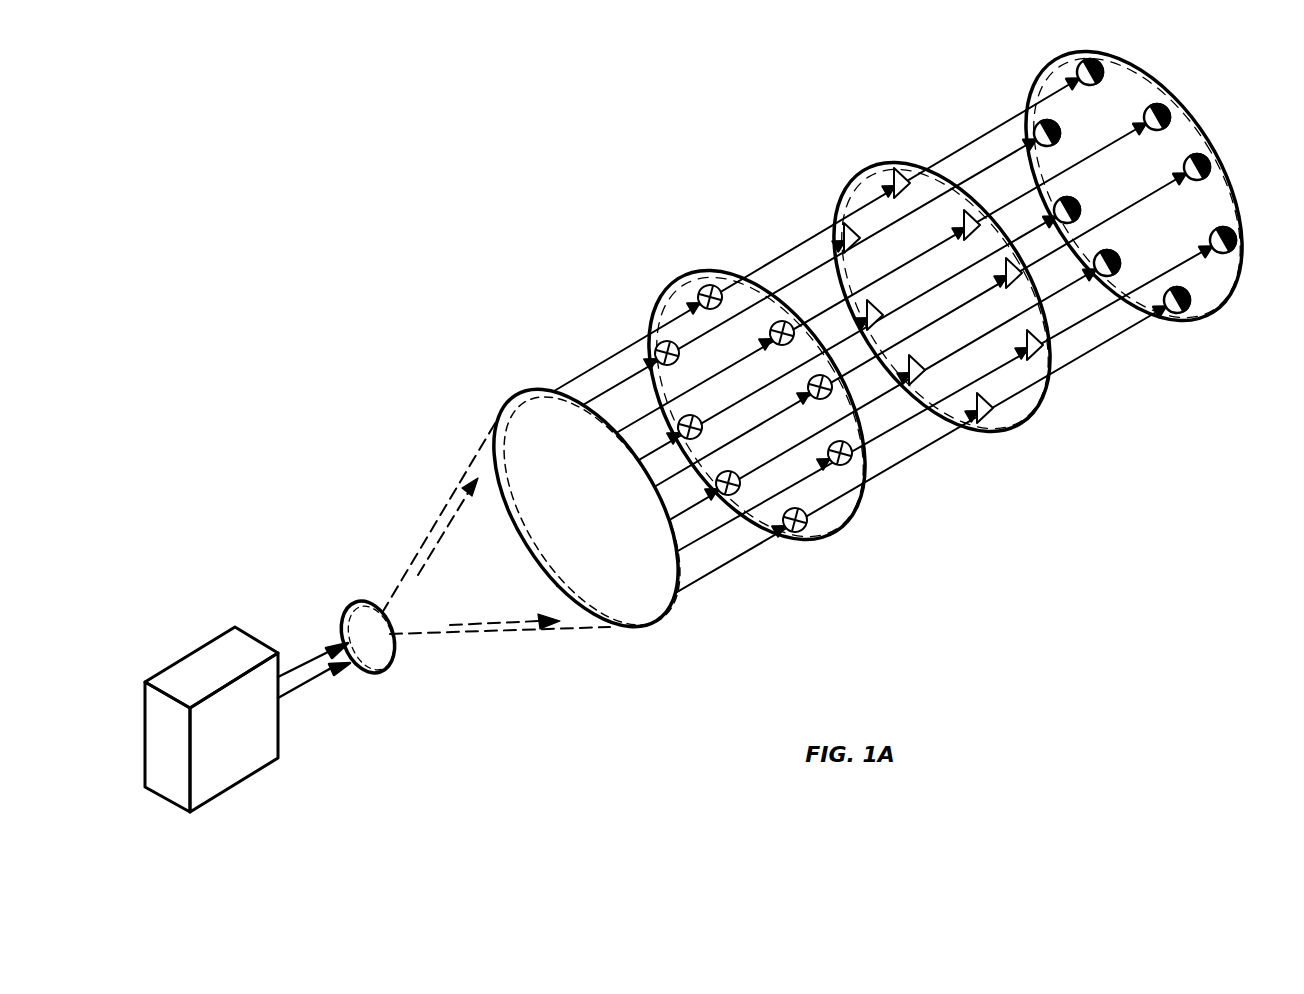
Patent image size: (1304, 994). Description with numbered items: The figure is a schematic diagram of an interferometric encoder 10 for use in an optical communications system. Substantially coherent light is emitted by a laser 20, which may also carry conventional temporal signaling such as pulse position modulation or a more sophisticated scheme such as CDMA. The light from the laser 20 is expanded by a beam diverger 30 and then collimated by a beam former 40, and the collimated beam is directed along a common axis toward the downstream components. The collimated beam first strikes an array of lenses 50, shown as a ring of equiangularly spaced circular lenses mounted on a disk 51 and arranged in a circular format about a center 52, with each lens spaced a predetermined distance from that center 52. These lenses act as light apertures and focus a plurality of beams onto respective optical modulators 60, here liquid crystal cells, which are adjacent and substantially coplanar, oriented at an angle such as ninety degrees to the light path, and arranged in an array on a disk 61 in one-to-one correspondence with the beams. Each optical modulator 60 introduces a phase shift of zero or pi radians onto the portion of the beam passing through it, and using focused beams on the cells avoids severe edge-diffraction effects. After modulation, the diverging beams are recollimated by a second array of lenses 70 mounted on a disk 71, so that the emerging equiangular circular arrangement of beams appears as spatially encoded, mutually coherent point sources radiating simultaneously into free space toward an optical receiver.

The interferometric encoder 10 is at (362, 251).
The laser 20 is at (212, 637).
The beam diverger 30 is at (347, 603).
The beam former 40 is at (523, 394).
The array of lenses 50 is at (769, 423).
The disk 51 is at (831, 542).
The center 52 is at (755, 418).
The optical modulator 60 is at (944, 310).
The disk 61 is at (1036, 414).
The array of lenses 70 is at (1136, 216).
The disk 71 is at (1227, 303).